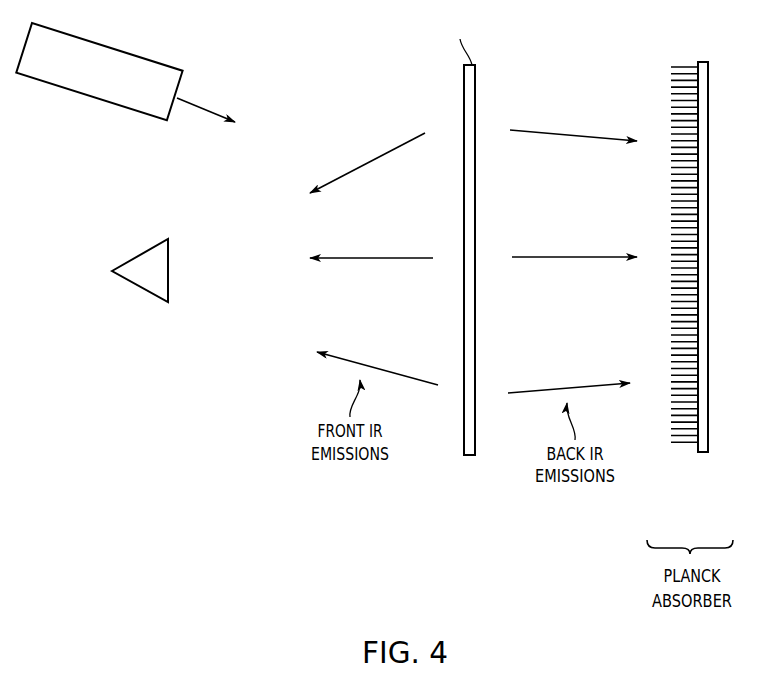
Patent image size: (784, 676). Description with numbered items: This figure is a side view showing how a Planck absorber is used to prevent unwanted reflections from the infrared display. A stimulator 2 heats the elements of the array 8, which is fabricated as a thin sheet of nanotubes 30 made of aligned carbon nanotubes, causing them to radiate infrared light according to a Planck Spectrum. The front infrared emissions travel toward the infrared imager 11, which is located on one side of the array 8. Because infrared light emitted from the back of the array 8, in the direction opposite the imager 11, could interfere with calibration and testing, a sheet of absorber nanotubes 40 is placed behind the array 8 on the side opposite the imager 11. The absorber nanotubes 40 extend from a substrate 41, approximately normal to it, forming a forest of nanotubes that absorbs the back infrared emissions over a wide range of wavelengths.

The stimulator 2 is at (100, 100).
The infrared imager 11 is at (142, 287).
The sheet of nanotubes 30 is at (463, 417).
The array 8 is at (460, 276).
The sheet of absorber nanotubes 40 is at (682, 453).
The substrate 41 is at (708, 390).